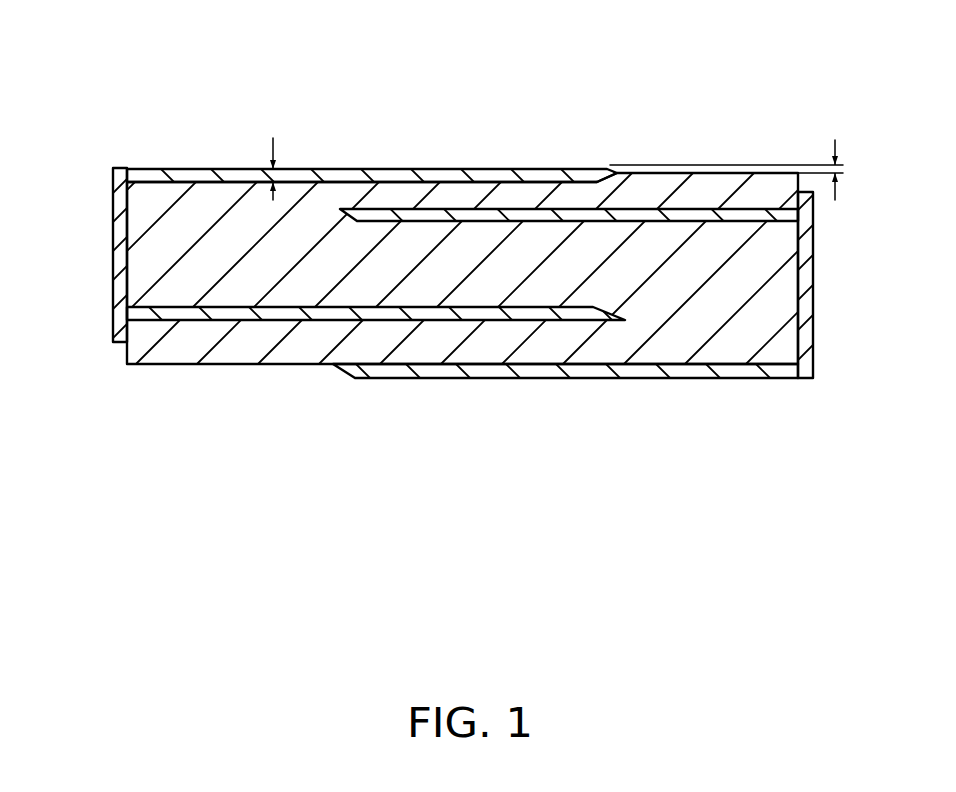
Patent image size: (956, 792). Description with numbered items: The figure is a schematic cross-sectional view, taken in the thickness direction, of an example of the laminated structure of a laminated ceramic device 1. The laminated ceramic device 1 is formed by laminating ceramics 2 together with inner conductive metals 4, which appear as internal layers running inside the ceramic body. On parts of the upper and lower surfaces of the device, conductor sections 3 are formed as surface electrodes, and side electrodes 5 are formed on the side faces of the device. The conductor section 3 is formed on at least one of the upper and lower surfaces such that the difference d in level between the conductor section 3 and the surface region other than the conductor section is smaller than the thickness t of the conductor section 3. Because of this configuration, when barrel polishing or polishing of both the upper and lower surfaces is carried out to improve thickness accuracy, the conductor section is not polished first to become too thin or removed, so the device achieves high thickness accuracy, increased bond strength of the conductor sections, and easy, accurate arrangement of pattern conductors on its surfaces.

The laminated ceramic device 1 is at (235, 128).
The ceramics 2 is at (553, 235).
The conductor section 3 is at (487, 177).
The inner conductive metal 4 is at (287, 307).
The side electrode 5 is at (120, 319).